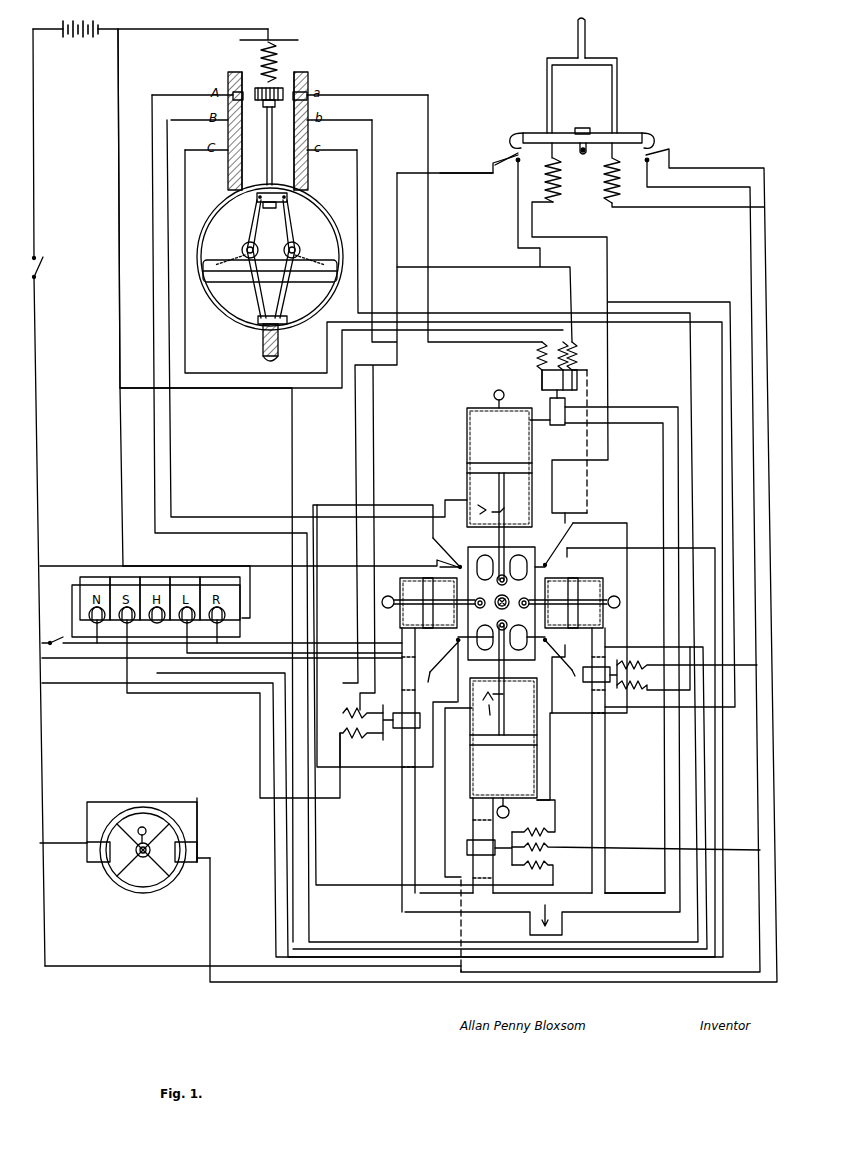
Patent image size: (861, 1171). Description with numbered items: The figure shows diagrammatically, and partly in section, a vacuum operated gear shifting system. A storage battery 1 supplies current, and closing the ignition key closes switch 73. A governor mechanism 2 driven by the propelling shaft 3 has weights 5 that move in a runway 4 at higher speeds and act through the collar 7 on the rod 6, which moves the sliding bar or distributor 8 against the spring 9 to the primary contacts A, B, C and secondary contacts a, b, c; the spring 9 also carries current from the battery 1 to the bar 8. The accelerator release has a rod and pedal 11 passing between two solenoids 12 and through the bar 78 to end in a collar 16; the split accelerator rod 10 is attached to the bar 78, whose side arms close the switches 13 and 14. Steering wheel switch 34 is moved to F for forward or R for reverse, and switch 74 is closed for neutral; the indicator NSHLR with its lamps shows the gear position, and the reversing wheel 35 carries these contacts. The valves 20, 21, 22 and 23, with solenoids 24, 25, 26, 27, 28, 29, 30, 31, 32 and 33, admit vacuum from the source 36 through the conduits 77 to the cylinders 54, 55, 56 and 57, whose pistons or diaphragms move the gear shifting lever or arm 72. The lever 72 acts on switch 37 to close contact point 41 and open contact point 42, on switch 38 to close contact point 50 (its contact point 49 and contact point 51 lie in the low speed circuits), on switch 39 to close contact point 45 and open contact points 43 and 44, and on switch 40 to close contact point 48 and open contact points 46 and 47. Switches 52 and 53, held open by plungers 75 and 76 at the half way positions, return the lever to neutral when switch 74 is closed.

The storage battery 1 is at (92, 20).
The governor mechanism 2 is at (235, 320).
The propelling shaft 3 is at (280, 350).
The runway or groove 4 is at (214, 268).
The weights 5 is at (243, 248).
The rod 6 is at (274, 150).
The collar 7 is at (270, 208).
The sliding bar or distributor 8 is at (280, 104).
The spring 9 is at (280, 58).
The accelerator rod 10 is at (588, 38).
The rod and pedal 11 is at (590, 148).
The solenoids 12 is at (547, 180).
The switch 13 is at (507, 155).
The switch 14 is at (662, 148).
The collar 16 is at (583, 128).
The valve 20 is at (542, 662).
The valve 21 is at (489, 848).
The valve 22 is at (401, 722).
The valve 23 is at (600, 674).
The solenoid 24 is at (580, 354).
The solenoid 25 is at (538, 358).
The solenoid 26 is at (556, 340).
The solenoid 27 is at (543, 819).
The solenoid 28 is at (636, 850).
The solenoid 29 is at (544, 872).
The solenoid 30 is at (687, 660).
The solenoid 31 is at (653, 668).
The solenoid 32 is at (358, 710).
The solenoid 33 is at (360, 740).
The switch 34 is at (138, 829).
The reversing wheel 35 is at (165, 885).
The source of vacuum 36 is at (563, 930).
The switch 37 is at (490, 564).
The switch 38 is at (490, 642).
The switch 39 is at (518, 564).
The switch 40 is at (518, 645).
The contact point 41 is at (440, 574).
The contact point 42 is at (430, 545).
The contact point 43 is at (570, 530).
The contact point 44 is at (550, 573).
The contact point 45 is at (567, 557).
The contact point 46 is at (558, 669).
The contact point 47 is at (566, 665).
The contact point 48 is at (568, 645).
The contact point 49 is at (445, 664).
The contact point 50 is at (440, 648).
The contact point 51 is at (435, 670).
The switch 52 is at (478, 516).
The switch 53 is at (485, 709).
The cylinder 54 is at (499, 485).
The cylinder 55 is at (574, 603).
The cylinder 56 is at (428, 603).
The cylinder 57 is at (503, 721).
The gear shifting lever or arm 72 is at (507, 596).
The switch 73 is at (44, 266).
The switch 74 is at (58, 636).
The plunger 75 is at (505, 511).
The plunger 76 is at (503, 694).
The conduits 77 is at (545, 900).
The bar 78 is at (529, 134).